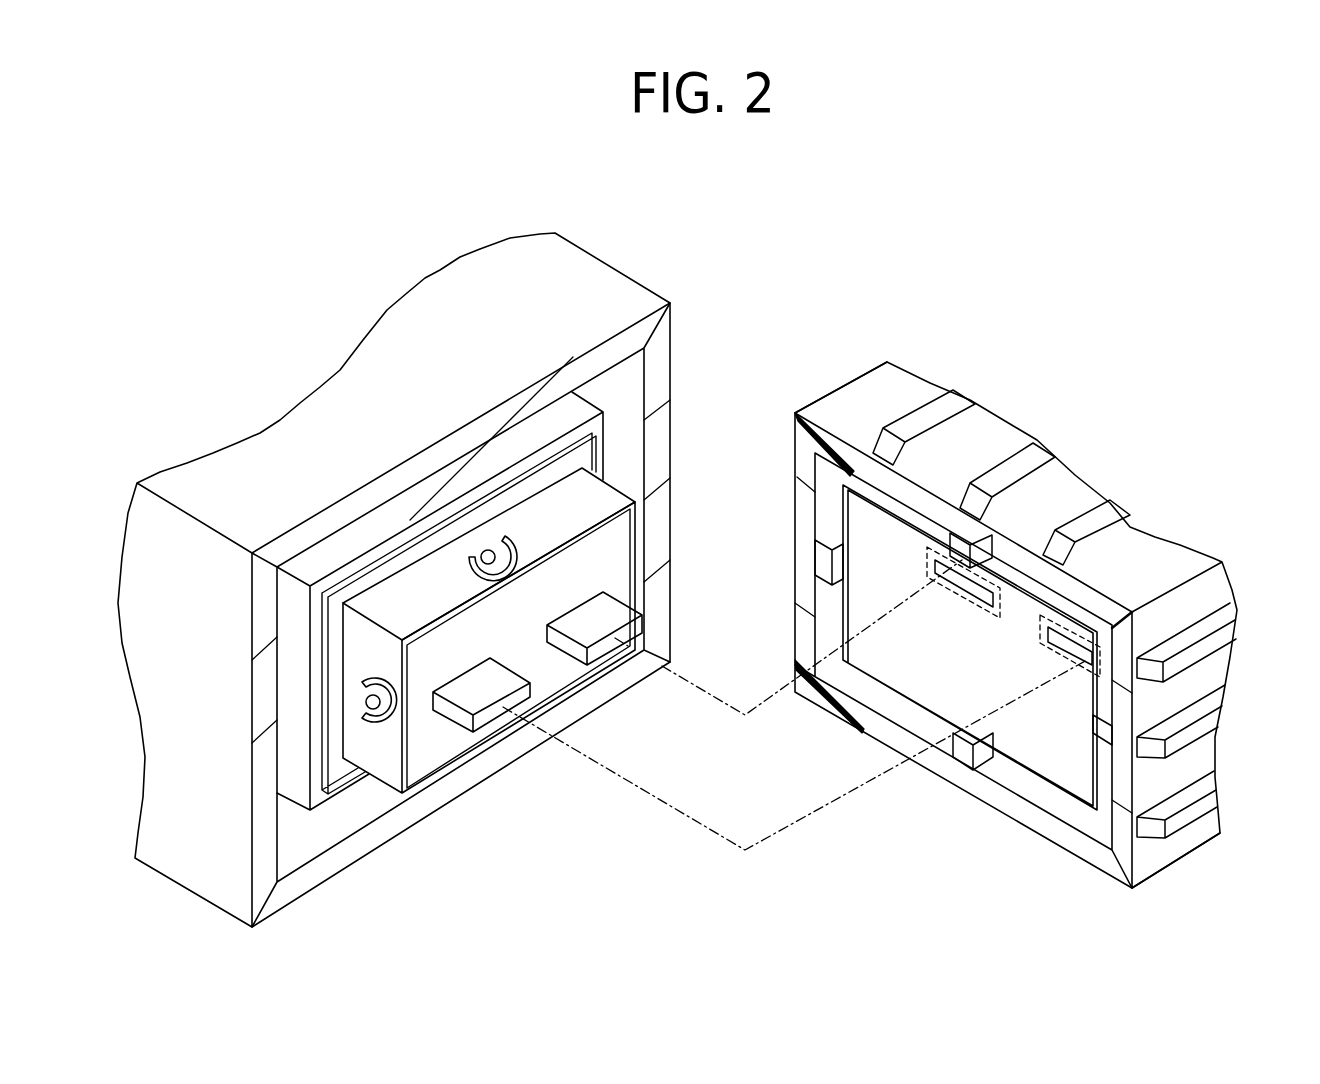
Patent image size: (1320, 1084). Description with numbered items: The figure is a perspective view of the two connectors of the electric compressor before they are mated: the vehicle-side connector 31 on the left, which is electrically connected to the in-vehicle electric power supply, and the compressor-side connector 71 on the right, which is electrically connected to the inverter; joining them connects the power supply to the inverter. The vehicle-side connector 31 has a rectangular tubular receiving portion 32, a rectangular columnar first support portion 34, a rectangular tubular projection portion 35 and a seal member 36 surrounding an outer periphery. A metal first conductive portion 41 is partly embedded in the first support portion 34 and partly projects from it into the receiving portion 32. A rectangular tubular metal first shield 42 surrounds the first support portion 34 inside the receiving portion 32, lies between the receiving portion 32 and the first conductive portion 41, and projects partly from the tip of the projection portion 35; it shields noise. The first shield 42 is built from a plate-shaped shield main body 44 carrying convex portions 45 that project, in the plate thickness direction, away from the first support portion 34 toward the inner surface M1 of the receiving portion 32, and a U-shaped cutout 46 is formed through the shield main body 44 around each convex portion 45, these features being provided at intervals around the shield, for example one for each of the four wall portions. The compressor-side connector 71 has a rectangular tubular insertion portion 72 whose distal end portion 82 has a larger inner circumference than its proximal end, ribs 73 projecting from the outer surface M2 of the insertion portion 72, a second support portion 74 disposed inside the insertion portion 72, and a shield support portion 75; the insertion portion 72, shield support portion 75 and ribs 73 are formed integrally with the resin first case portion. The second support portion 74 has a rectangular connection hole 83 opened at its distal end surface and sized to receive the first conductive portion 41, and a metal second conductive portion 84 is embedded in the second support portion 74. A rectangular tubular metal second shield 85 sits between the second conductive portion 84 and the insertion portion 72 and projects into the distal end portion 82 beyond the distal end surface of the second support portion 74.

The vehicle-side connector 31 is at (600, 262).
The receiving portion 32 is at (660, 374).
The first support portion 34 is at (436, 765).
The projection portion 35 is at (342, 786).
The seal member 36 is at (345, 540).
The first conductive portion 41 is at (583, 607).
The first shield 42 is at (632, 532).
The shield main body 44 is at (555, 495).
The convex portion 45 is at (508, 541).
The cutout 46 is at (468, 562).
The compressor-side connector 71 is at (908, 366).
The insertion portion 72 is at (1165, 872).
The rib 73 is at (955, 400).
The second support portion 74 is at (968, 656).
The shield support portion 75 is at (952, 535).
The distal end portion 82 is at (862, 388).
The connection hole 83 is at (967, 597).
The second conductive portion 84 is at (1088, 600).
The second shield 85 is at (1043, 786).
The inner surface of the receiving portion M1 is at (408, 492).
The outer surface of the insertion portion M2 is at (1002, 425).